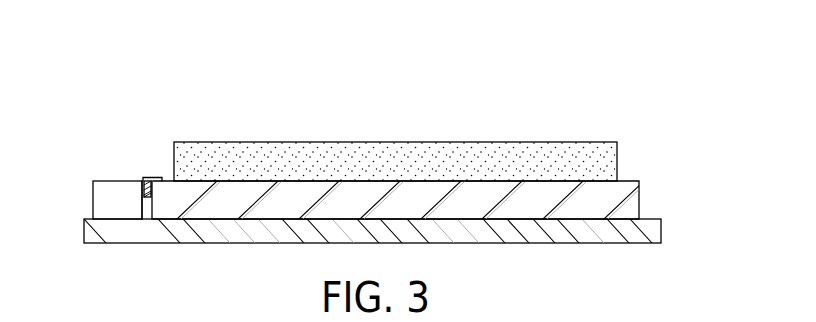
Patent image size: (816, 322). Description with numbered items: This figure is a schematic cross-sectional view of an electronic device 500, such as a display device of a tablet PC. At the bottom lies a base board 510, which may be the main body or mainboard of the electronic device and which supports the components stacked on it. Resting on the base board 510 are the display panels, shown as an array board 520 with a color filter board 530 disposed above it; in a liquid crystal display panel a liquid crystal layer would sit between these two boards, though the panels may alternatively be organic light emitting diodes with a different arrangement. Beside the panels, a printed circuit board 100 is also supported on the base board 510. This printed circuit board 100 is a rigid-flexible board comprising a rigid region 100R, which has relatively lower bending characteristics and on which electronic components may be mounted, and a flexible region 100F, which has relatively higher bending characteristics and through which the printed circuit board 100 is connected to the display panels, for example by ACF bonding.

The electronic device 500 is at (482, 51).
The printed circuit board 100 is at (155, 86).
The rigid region 100R is at (108, 190).
The flexible region 100F is at (153, 178).
The base board 510 is at (650, 229).
The array board 520 is at (632, 197).
The color filter board 530 is at (617, 159).